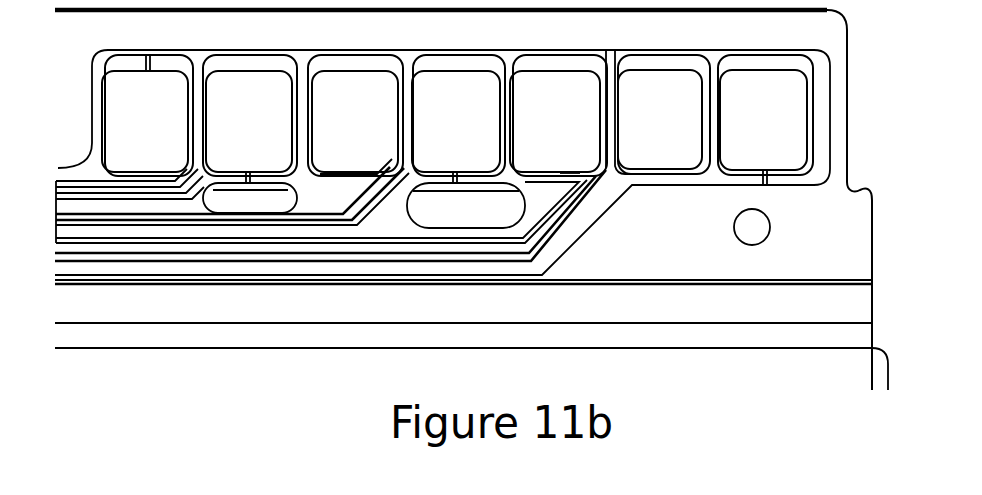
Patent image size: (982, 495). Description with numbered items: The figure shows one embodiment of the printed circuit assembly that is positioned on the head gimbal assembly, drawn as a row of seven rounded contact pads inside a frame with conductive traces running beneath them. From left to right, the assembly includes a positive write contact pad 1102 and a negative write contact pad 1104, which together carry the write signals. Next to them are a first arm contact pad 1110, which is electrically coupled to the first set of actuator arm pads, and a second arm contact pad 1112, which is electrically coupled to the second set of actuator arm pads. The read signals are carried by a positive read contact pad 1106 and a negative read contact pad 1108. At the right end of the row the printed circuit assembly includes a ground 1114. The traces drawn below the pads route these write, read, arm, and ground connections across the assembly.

The positive write contact pad 1102 is at (179, 128).
The negative write contact pad 1104 is at (277, 128).
The first arm contact pad 1110 is at (384, 128).
The second arm contact pad 1112 is at (485, 128).
The positive read contact pad 1106 is at (587, 128).
The negative read contact pad 1108 is at (692, 128).
The ground 1114 is at (792, 128).